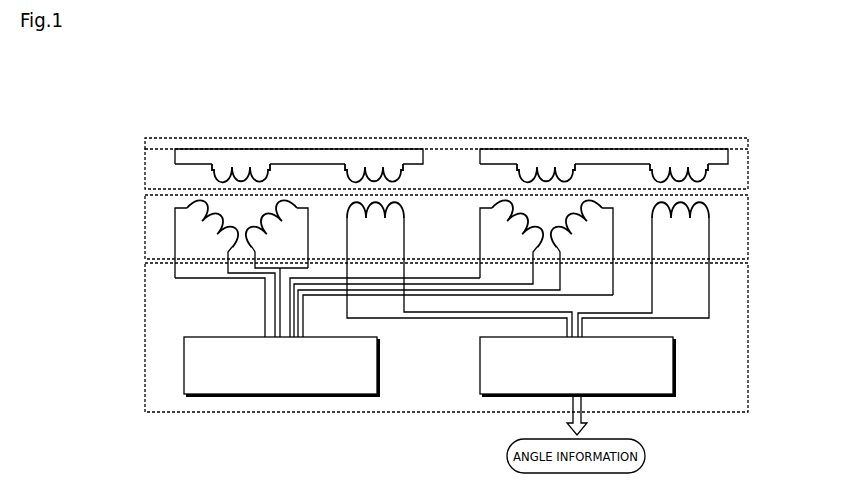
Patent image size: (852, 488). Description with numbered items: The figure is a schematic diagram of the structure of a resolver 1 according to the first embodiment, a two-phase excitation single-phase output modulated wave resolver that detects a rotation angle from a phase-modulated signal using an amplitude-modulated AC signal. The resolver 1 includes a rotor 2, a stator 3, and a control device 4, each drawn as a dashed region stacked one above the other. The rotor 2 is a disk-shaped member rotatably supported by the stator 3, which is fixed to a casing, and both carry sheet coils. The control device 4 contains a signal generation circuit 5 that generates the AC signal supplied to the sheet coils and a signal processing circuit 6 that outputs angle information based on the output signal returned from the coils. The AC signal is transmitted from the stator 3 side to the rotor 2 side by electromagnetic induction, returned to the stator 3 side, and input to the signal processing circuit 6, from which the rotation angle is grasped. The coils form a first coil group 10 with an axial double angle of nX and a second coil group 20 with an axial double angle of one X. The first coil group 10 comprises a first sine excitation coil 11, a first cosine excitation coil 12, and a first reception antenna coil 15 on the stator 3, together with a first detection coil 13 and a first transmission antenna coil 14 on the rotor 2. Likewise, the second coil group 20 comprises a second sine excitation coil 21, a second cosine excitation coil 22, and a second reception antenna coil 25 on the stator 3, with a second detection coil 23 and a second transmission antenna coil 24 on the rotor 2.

The resolver 1 is at (774, 121).
The rotor 2 is at (750, 153).
The stator 3 is at (750, 207).
The control device 4 is at (750, 310).
The signal generation circuit 5 is at (378, 365).
The signal processing circuit 6 is at (674, 365).
The first coil group 10 is at (235, 113).
The first sine excitation coil 11 is at (187, 205).
The first cosine excitation coil 12 is at (294, 202).
The first detection coil 13 is at (213, 172).
The first transmission antenna coil 14 is at (340, 167).
The first reception antenna coil 15 is at (408, 205).
The second coil group 20 is at (539, 113).
The second sine excitation coil 21 is at (500, 205).
The second cosine excitation coil 22 is at (603, 202).
The second detection coil 23 is at (518, 172).
The second transmission antenna coil 24 is at (645, 167).
The second reception antenna coil 25 is at (712, 205).